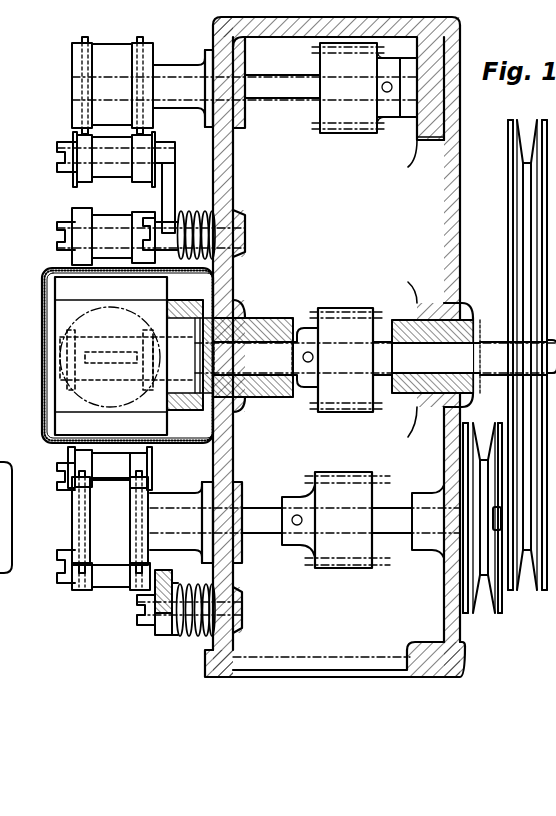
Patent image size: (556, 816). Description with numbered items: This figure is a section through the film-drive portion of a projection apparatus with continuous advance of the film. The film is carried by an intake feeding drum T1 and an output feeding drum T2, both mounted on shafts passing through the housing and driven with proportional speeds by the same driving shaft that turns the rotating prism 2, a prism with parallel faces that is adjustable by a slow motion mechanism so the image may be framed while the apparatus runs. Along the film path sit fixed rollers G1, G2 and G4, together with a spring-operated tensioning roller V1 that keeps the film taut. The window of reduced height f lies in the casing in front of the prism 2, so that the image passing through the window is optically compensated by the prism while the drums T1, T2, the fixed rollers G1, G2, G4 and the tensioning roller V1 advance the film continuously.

The intake feeding drum T1 is at (108, 105).
The spring-operated tensioning roller V1 is at (58, 160).
The fixed roller G1 is at (60, 238).
The window of reduced height f is at (83, 350).
The rotating prism with parallel faces 2 is at (74, 423).
The fixed roller G2 is at (82, 466).
The output feeding drum T2 is at (100, 525).
The fixed roller G4 is at (58, 578).